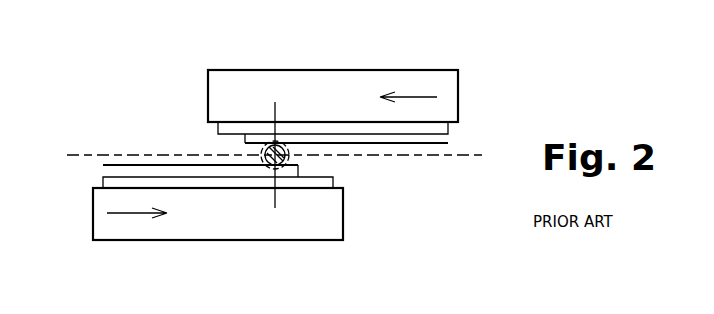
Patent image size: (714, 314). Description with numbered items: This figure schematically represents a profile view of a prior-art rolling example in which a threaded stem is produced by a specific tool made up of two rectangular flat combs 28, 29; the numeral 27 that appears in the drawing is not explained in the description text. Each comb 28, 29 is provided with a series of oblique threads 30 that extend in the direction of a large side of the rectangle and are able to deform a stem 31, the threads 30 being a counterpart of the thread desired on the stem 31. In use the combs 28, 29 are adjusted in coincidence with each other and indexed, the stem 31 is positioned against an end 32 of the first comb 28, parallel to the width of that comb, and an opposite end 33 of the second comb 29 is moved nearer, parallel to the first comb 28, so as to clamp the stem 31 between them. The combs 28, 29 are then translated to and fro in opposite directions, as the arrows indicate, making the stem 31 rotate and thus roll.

The contact plane 27 is at (110, 137).
The first comb 28 is at (318, 70).
The second comb 29 is at (259, 243).
The oblique threads 30 is at (155, 160).
The stem 31 is at (272, 141).
The end of the first comb 32 is at (258, 141).
The opposite end of the second comb 33 is at (298, 169).